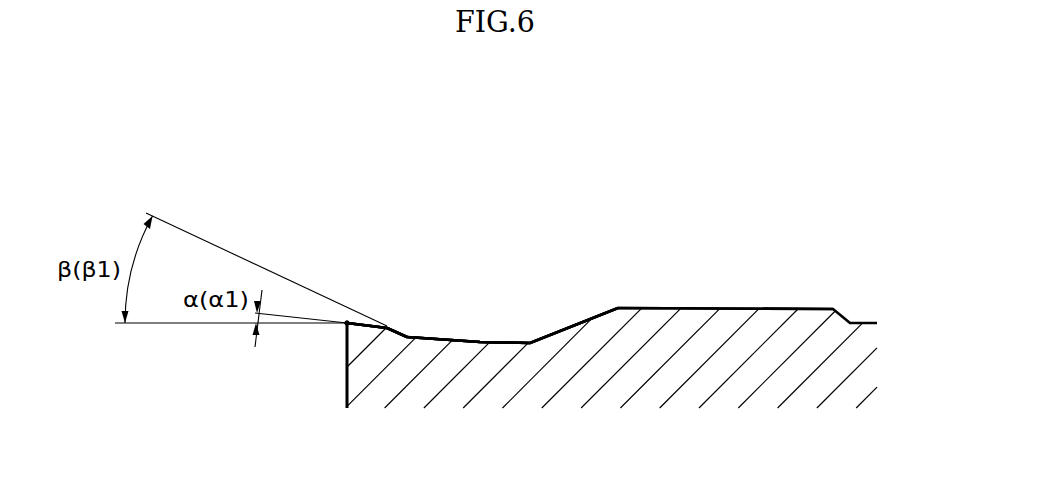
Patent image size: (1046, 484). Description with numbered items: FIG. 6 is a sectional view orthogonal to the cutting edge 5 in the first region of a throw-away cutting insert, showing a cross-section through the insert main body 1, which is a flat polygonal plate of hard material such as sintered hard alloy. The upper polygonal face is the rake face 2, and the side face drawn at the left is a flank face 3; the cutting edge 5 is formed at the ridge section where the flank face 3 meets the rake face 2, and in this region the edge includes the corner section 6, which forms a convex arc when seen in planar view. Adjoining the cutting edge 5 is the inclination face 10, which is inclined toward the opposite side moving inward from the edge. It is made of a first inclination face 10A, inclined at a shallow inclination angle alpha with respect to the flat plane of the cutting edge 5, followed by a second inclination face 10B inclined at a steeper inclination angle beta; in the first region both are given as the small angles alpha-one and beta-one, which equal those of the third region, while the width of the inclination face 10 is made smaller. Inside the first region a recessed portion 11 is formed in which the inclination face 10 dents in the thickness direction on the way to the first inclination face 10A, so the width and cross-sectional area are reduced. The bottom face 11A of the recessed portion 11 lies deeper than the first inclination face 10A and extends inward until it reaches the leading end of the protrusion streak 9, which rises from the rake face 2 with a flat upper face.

The insert main body 1 is at (829, 250).
The rake face 2 is at (470, 234).
The flank face 3 is at (334, 376).
The cutting edge 5 is at (346, 322).
The corner section 6 is at (347, 323).
The protrusion streak 9 is at (697, 308).
The inclination face 10 is at (457, 213).
The first inclination face 10A is at (362, 323).
The second inclination face 10B is at (403, 333).
The recessed portion 11 is at (481, 307).
The bottom face 11A is at (483, 341).